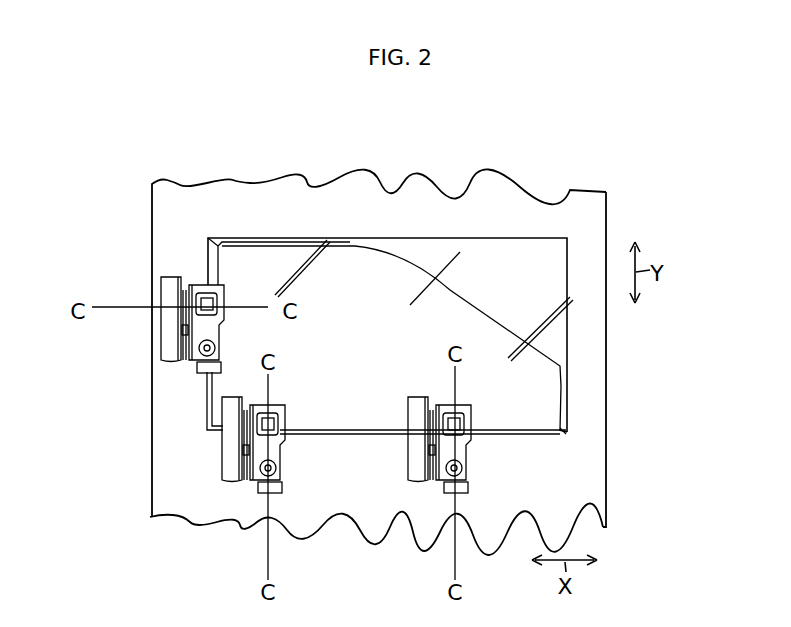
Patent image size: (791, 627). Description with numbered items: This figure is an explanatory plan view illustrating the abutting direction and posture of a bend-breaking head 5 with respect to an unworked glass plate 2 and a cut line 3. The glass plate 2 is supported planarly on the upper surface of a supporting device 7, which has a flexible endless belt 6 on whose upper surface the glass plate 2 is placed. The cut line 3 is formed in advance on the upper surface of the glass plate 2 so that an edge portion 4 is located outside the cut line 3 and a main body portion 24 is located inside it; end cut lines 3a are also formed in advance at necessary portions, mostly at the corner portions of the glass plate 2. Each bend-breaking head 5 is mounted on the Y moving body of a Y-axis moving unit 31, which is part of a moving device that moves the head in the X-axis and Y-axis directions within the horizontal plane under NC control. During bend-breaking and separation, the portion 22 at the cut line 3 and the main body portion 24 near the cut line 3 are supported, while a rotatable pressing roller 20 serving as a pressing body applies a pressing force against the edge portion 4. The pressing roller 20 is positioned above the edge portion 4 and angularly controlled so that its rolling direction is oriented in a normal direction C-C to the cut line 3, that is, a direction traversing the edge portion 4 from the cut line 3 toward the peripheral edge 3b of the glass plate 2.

The glass plate 2 is at (430, 258).
The cut line 3 is at (431, 311).
The end cut line 3a is at (215, 240).
The peripheral edge 3b is at (533, 437).
The edge portion 4 is at (203, 413).
The bend-breaking head 5 is at (202, 298).
The endless belt 6 is at (593, 352).
The supporting device 7 is at (507, 212).
The pressing roller 20 is at (193, 299).
The portion at the cut line 22 is at (333, 432).
The main body portion 24 is at (347, 290).
The Y-axis moving unit 31 is at (173, 277).